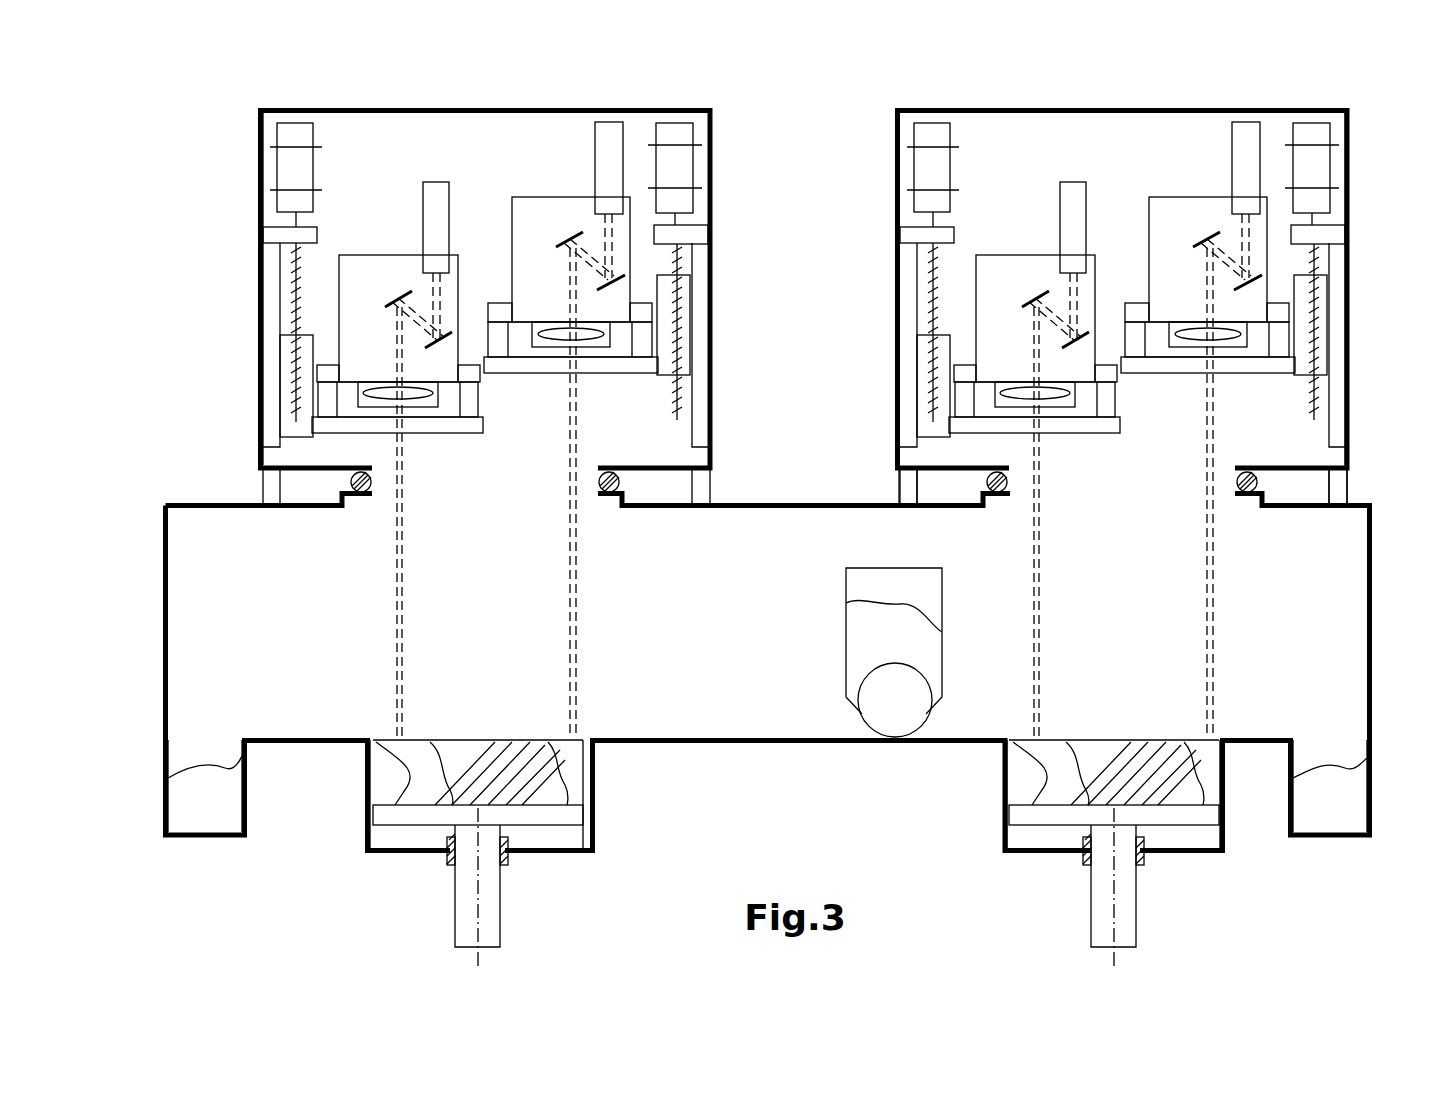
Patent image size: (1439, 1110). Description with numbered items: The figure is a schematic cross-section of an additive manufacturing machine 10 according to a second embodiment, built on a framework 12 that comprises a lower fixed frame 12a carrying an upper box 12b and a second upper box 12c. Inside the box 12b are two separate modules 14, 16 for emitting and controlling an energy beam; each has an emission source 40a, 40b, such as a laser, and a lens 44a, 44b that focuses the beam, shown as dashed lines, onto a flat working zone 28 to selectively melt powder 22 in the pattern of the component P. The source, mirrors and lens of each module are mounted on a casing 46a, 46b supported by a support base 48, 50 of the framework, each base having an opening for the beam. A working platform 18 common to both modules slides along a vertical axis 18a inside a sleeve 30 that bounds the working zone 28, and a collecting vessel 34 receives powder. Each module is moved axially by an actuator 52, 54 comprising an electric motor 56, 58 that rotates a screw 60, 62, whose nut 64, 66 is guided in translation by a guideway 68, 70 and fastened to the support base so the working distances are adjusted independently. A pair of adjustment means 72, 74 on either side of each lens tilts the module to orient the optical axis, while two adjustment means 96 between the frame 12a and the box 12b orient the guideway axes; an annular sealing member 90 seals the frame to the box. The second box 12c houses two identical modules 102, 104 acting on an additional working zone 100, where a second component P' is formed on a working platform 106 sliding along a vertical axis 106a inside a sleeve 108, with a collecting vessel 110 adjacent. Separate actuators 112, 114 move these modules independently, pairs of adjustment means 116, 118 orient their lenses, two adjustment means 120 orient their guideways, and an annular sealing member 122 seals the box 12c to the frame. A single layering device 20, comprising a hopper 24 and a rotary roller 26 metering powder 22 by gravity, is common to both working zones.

The machine 10 is at (818, 126).
The framework 12 is at (1360, 160).
The lower fixed frame 12a is at (1372, 600).
The upper box 12b is at (1330, 310).
The second upper box 12c is at (262, 288).
The module 14 is at (995, 245).
The module 16 is at (1172, 195).
The working platform 18 is at (1178, 826).
The vertical axis 18a is at (1113, 905).
The layering device 20 is at (830, 630).
The powder 22 is at (930, 643).
The hopper 24 is at (846, 578).
The rotary roller 26 is at (880, 713).
The working zone 28 is at (1120, 738).
The sleeve 30 is at (1226, 810).
The collecting vessel 34 is at (1372, 752).
The emission source 40a is at (1074, 186).
The emission source 40b is at (1246, 128).
The lens 44a is at (1015, 398).
The lens 44b is at (1190, 335).
The casing 46a is at (1043, 256).
The casing 46b is at (1220, 192).
The support base 48 is at (960, 418).
The support base 50 is at (1275, 365).
The actuator 52 is at (913, 215).
The actuator 54 is at (1335, 215).
The electric motor 56 is at (942, 160).
The electric motor 58 is at (1316, 130).
The screw 60 is at (925, 262).
The screw 62 is at (1335, 270).
The nut 64 is at (930, 357).
The nut 66 is at (1322, 352).
The guideway 68 is at (905, 300).
The guideway 70 is at (1330, 330).
The adjustment means 72 is at (982, 408).
The adjustment means 74 is at (1277, 350).
The annular sealing member 90 is at (1252, 495).
The adjustment means 96 is at (896, 488).
The additional working zone 100 is at (450, 738).
The module 102 is at (378, 238).
The module 104 is at (560, 190).
The working platform 106 is at (543, 826).
The vertical axis 106a is at (478, 905).
The sleeve 108 is at (592, 778).
The collecting vessel 110 is at (168, 800).
The actuator 112 is at (273, 217).
The actuator 114 is at (685, 215).
The adjustment means 116 is at (345, 408).
The adjustment means 118 is at (640, 350).
The adjustment means 120 is at (262, 488).
The annular sealing member 122 is at (620, 495).
The component P is at (1131, 738).
The second component P' is at (499, 739).